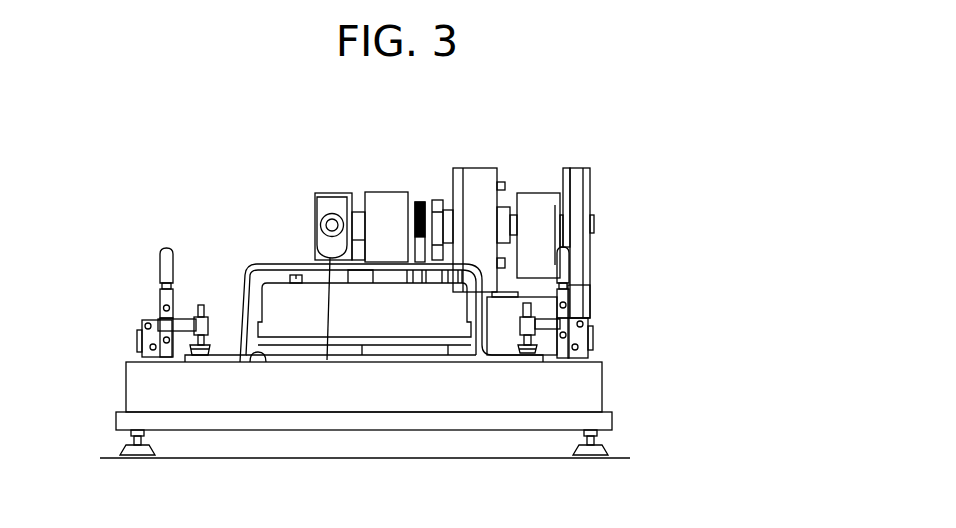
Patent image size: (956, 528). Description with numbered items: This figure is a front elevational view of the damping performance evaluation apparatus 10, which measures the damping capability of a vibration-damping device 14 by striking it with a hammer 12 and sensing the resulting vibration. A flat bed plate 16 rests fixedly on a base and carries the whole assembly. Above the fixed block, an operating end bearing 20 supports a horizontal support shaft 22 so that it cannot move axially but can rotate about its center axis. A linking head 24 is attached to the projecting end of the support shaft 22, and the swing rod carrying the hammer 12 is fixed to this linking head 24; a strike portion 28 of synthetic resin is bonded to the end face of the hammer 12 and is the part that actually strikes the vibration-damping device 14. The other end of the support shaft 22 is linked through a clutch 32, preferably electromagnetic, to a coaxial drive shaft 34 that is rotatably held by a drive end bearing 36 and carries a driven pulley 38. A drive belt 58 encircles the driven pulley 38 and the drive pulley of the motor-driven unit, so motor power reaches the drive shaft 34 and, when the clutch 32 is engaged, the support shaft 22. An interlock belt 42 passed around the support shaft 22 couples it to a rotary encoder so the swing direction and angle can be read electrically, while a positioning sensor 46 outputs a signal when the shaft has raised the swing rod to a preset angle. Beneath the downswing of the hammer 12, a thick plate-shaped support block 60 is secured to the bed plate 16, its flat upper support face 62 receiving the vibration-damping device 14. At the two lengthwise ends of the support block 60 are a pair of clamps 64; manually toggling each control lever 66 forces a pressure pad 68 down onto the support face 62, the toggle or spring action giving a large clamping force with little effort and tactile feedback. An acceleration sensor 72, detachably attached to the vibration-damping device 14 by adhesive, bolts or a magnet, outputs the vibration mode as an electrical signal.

The damping performance evaluation apparatus 10 is at (607, 175).
The hammer 12 is at (318, 208).
The vibration-damping device 14 is at (256, 257).
The bed plate 16 is at (605, 421).
The operating end bearing 20 is at (390, 205).
The support shaft 22 is at (358, 217).
The linking head 24 is at (332, 197).
The strike portion 28 is at (327, 360).
The clutch 32 is at (479, 177).
The drive shaft 34 is at (513, 222).
The drive end bearing 36 is at (540, 207).
The driven pulley 38 is at (591, 164).
The interlock belt 42 is at (421, 203).
The positioning sensor 46 is at (438, 200).
The drive belt 58 is at (575, 288).
The support block 60 is at (135, 383).
The support face 62 is at (252, 357).
The clamp 64 is at (133, 322).
The control lever 66 is at (165, 262).
The pressure pad 68 is at (207, 346).
The acceleration sensor 72 is at (293, 273).